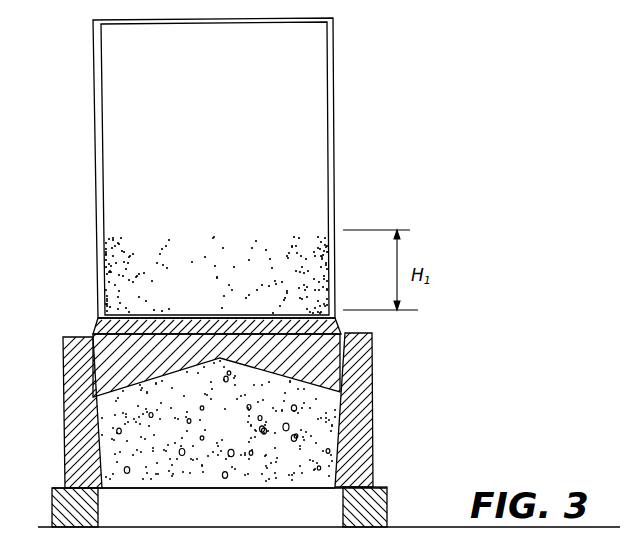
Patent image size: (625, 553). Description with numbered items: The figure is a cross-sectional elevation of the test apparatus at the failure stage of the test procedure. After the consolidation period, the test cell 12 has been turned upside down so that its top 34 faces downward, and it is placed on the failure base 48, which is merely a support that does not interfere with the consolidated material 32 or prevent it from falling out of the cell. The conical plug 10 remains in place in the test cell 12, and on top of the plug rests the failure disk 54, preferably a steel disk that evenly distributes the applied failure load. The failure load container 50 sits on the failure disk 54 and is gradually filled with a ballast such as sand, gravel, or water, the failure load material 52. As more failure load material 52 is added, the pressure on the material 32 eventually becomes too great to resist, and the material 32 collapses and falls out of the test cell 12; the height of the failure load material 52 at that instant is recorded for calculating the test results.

The conical plug 10 is at (95, 374).
The test cell 12 is at (372, 393).
The material 32 is at (240, 437).
The top of the test cell 34 is at (125, 489).
The failure base 48 is at (388, 496).
The failure load container 50 is at (97, 190).
The failure load material 52 is at (228, 285).
The failure disk 54 is at (97, 331).